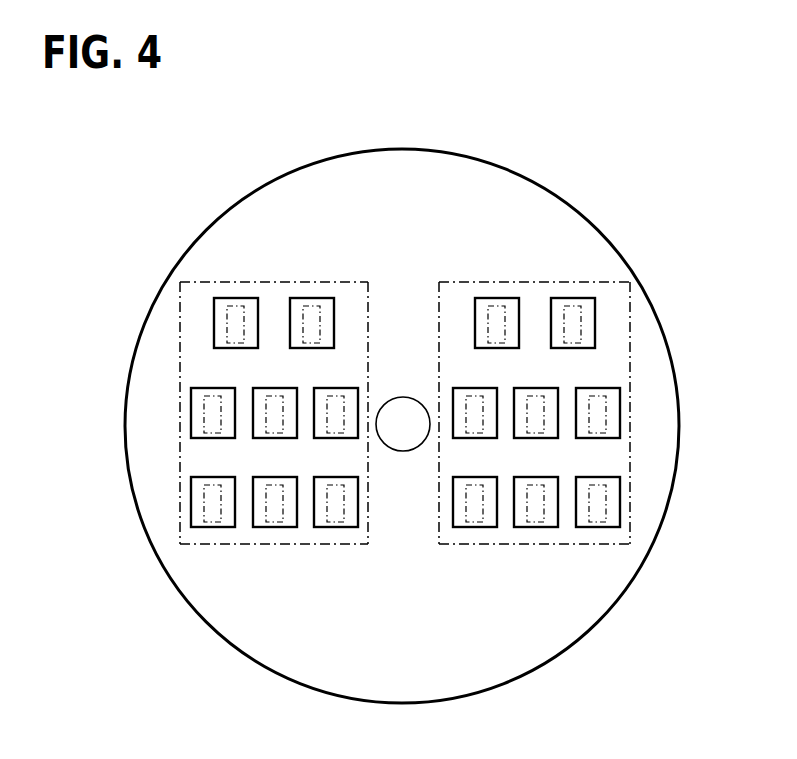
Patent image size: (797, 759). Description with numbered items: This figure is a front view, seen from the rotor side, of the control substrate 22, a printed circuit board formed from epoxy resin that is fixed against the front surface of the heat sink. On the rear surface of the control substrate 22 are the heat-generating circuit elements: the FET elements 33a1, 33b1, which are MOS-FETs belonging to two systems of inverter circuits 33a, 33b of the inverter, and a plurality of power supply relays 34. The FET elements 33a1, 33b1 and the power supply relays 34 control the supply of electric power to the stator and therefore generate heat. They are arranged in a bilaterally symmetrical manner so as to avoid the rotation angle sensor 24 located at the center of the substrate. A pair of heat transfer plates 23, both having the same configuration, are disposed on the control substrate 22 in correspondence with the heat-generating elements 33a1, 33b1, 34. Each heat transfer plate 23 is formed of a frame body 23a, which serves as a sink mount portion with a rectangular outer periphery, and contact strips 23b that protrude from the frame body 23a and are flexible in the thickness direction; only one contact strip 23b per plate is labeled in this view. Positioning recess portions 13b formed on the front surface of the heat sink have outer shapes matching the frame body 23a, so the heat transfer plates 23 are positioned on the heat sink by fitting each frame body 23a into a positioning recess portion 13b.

The control substrate 22 is at (253, 214).
The rotation angle sensor 24 is at (401, 447).
The positioning recess portions 13b is at (368, 300).
The heat transfer plates 23 is at (193, 542).
The frame body 23a is at (262, 542).
The contact strips 23b is at (230, 333).
The inverter circuit 33a is at (203, 462).
The FET elements 33a1 is at (320, 399).
The inverter circuit 33b is at (612, 463).
The FET elements 33b1 is at (488, 401).
The power supply relays 34 is at (222, 308).